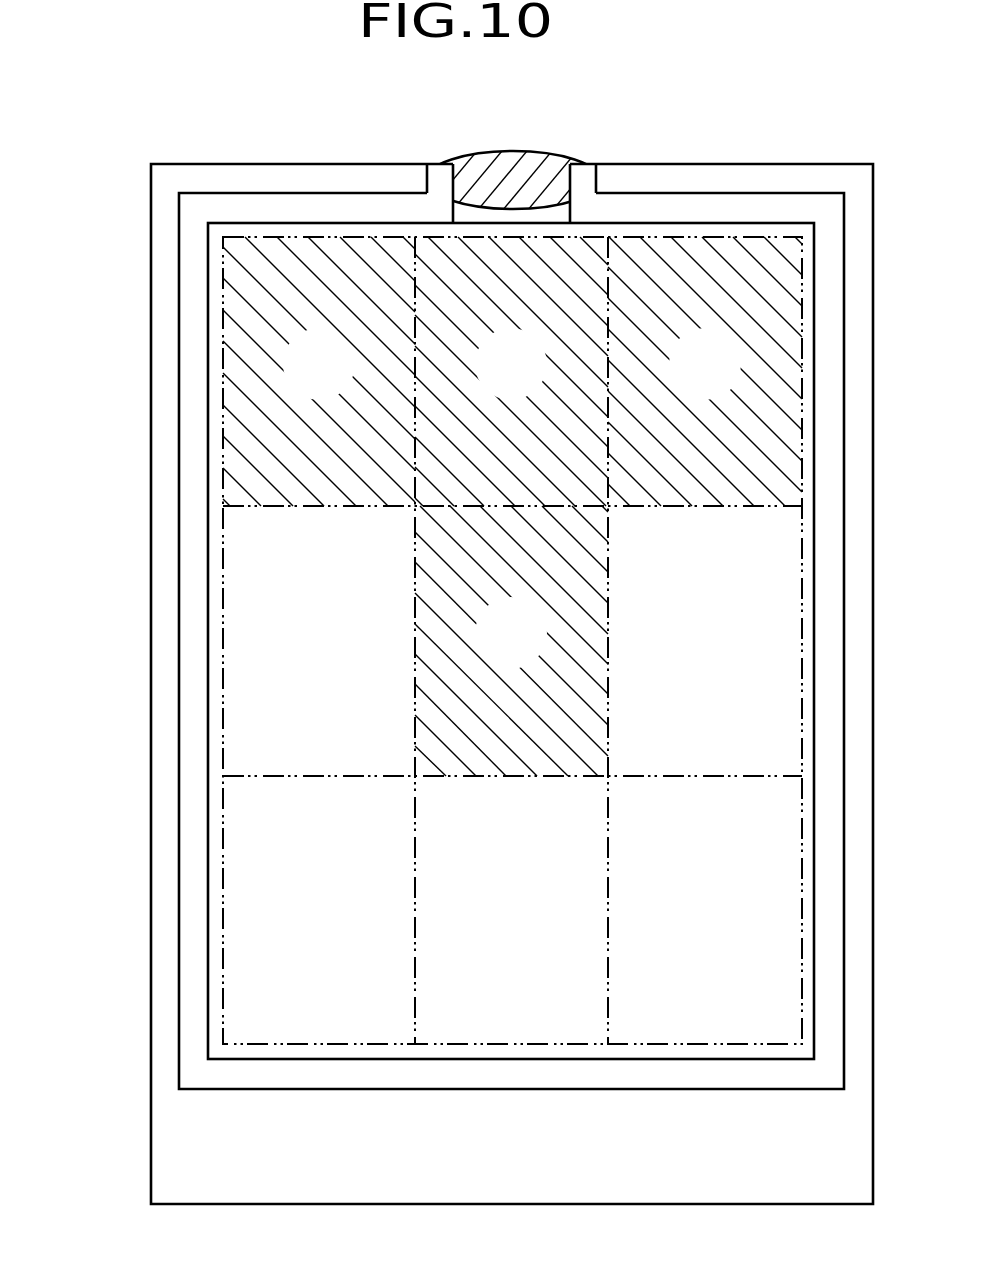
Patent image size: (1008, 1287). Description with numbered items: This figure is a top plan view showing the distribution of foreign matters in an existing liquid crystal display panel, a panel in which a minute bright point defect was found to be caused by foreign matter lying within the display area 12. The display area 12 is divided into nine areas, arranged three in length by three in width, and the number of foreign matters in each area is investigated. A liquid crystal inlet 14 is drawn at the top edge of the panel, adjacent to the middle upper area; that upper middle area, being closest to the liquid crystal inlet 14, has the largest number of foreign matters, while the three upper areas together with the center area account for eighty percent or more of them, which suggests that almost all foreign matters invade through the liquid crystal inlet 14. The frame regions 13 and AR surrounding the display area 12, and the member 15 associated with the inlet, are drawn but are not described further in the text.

The display area 12 is at (222, 626).
The frame region 13 is at (192, 868).
The liquid crystal inlet 14 is at (542, 181).
The light emitting portion 15 is at (490, 168).
The area of display device AR is at (176, 1140).